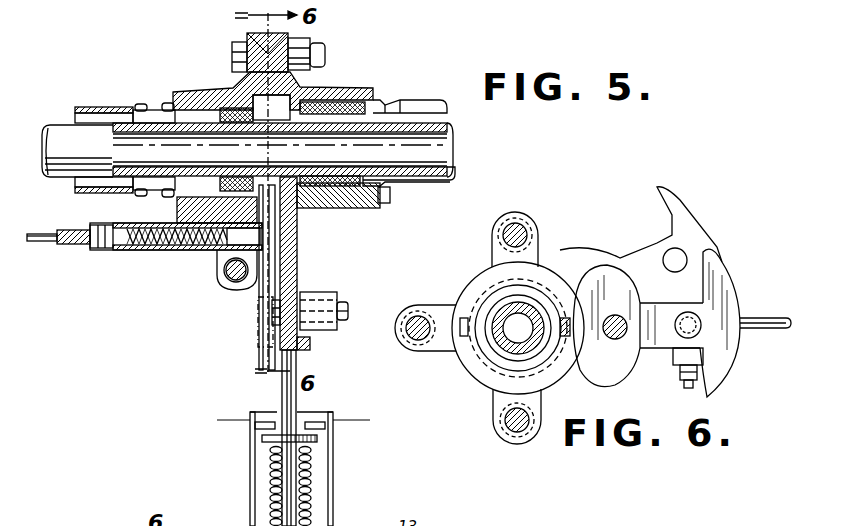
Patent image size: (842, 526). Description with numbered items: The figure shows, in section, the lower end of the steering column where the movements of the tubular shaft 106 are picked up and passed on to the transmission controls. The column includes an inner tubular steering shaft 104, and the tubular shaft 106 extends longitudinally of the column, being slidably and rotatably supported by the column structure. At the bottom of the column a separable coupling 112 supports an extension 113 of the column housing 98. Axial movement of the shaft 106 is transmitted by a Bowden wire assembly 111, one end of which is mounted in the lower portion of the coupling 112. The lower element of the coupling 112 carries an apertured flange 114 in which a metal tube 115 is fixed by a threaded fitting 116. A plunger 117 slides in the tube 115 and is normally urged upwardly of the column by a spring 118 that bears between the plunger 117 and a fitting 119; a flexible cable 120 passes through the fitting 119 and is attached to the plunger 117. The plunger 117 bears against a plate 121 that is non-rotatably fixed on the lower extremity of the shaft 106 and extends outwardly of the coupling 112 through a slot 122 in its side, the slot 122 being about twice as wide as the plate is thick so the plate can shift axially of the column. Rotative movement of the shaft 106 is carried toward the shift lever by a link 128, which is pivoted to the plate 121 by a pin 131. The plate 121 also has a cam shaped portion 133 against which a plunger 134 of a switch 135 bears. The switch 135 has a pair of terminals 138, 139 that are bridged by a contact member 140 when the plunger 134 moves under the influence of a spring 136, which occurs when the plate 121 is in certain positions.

In FIG. 5, the column housing 98 is at (440, 88).
In FIG. 5, the inner tubular steering shaft 104 is at (66, 113).
In FIG. 6, the inner tubular steering shaft 104 is at (497, 335).
In FIG. 5, the tubular shaft 106 is at (366, 177).
In FIG. 6, the tubular shaft 106 is at (488, 360).
In FIG. 5, the Bowden wire assembly 111 is at (68, 224).
In FIG. 5, the separable coupling 112 is at (206, 92).
In FIG. 6, the separable coupling 112 is at (477, 270).
In FIG. 5, the extension 113 is at (118, 107).
In FIG. 5, the apertured flange 114 is at (221, 262).
In FIG. 5, the metal tube 115 is at (133, 250).
In FIG. 5, the threaded fitting 116 is at (197, 217).
In FIG. 5, the plunger 117 is at (294, 218).
In FIG. 6, the plunger 117 is at (622, 302).
In FIG. 5, the spring 118 is at (170, 249).
In FIG. 5, the fitting 119 is at (98, 248).
In FIG. 5, the flexible cable 120 is at (34, 243).
In FIG. 5, the plate 121 is at (287, 248).
In FIG. 6, the plate 121 is at (657, 302).
In FIG. 5, the slot 122 is at (275, 177).
In FIG. 5, the link 128 is at (316, 300).
In FIG. 6, the link 128 is at (680, 384).
In FIG. 5, the pin 131 is at (344, 308).
In FIG. 5, the cam shaped portion 133 is at (303, 350).
In FIG. 6, the cam shaped portion 133 is at (736, 280).
In FIG. 5, the plunger 134 is at (296, 398).
In FIG. 6, the plunger 134 is at (742, 328).
In FIG. 5, the switch 135 is at (322, 457).
In FIG. 5, the spring 136 is at (270, 478).
In FIG. 5, the terminal 138 is at (262, 420).
In FIG. 5, the terminal 139 is at (320, 420).
In FIG. 5, the contact member 140 is at (315, 438).